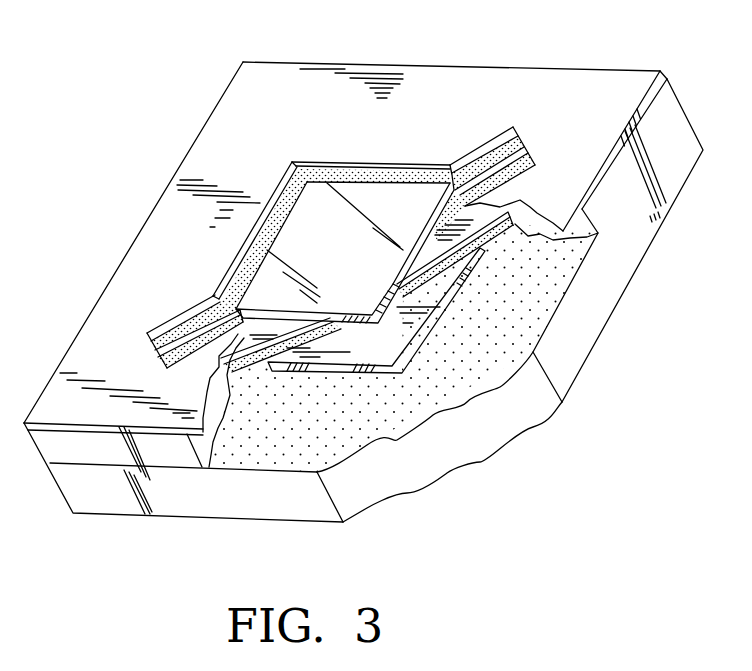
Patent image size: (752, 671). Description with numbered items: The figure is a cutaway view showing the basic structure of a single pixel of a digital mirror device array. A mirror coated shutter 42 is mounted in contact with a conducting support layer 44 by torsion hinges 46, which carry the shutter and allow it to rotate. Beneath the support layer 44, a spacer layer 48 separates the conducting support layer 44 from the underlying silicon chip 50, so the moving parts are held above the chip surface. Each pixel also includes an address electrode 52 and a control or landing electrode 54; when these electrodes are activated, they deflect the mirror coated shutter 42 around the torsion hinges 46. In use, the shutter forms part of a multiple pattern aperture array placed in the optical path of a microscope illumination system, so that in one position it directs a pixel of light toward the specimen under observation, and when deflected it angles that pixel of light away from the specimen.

The mirror coated shutter 42 is at (278, 242).
The conducting support layer 44 is at (227, 115).
The torsion hinges 46 is at (153, 330).
The spacer layer 48 is at (662, 90).
The silicon chip 50 is at (633, 215).
The address electrode 52 is at (437, 222).
The control or landing electrode 54 is at (395, 335).